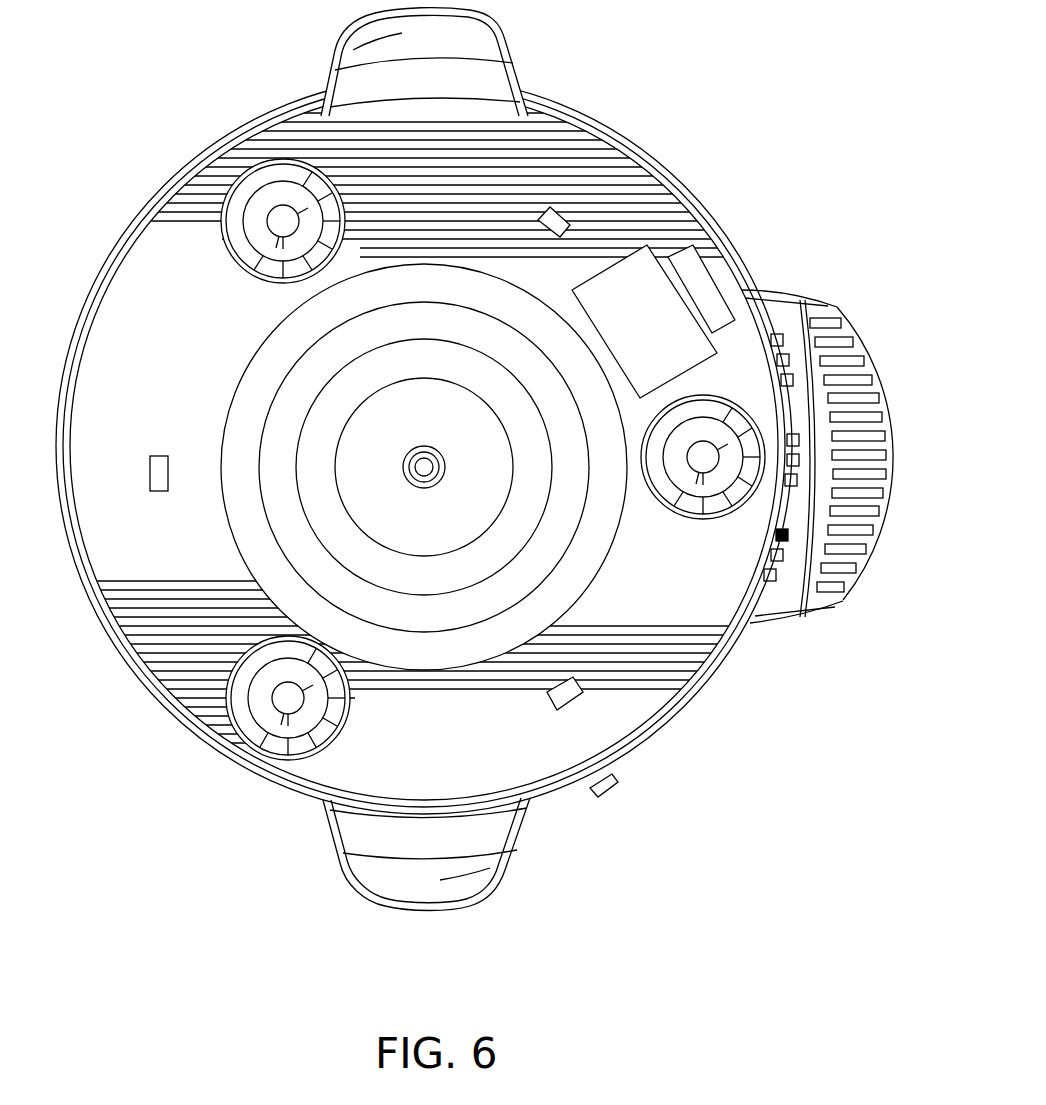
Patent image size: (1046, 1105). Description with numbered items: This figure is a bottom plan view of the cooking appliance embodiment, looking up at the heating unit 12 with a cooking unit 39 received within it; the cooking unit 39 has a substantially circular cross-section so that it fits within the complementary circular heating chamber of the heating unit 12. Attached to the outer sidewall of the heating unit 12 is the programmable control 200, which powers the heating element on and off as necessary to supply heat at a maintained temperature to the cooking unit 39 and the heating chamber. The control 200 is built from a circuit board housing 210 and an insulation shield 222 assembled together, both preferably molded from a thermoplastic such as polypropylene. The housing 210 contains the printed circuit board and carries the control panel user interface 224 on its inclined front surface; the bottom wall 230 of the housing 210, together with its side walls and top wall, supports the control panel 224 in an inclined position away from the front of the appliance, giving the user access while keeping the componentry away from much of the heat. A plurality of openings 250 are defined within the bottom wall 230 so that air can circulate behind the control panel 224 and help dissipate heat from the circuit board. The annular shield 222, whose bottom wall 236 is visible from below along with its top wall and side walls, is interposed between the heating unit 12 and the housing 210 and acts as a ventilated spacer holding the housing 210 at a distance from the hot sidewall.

The heating unit 12 is at (535, 835).
The cooking unit 39 is at (612, 785).
The programmable control 200 is at (842, 455).
The circuit board housing 210 is at (880, 466).
The insulation shield 222 is at (745, 290).
The control panel user interface 224 is at (872, 362).
The bottom wall 230 is at (822, 320).
The bottom wall 236 is at (770, 600).
The openings 250 is at (876, 522).